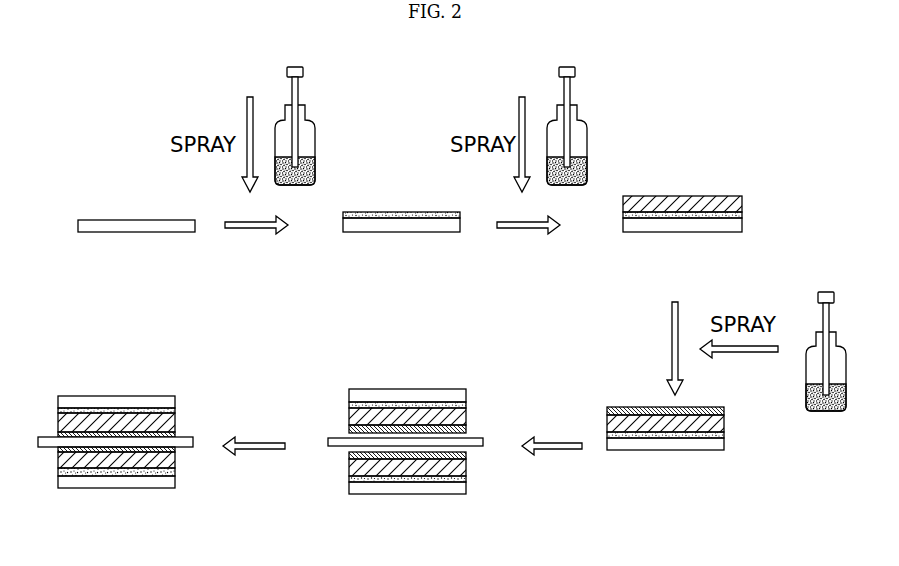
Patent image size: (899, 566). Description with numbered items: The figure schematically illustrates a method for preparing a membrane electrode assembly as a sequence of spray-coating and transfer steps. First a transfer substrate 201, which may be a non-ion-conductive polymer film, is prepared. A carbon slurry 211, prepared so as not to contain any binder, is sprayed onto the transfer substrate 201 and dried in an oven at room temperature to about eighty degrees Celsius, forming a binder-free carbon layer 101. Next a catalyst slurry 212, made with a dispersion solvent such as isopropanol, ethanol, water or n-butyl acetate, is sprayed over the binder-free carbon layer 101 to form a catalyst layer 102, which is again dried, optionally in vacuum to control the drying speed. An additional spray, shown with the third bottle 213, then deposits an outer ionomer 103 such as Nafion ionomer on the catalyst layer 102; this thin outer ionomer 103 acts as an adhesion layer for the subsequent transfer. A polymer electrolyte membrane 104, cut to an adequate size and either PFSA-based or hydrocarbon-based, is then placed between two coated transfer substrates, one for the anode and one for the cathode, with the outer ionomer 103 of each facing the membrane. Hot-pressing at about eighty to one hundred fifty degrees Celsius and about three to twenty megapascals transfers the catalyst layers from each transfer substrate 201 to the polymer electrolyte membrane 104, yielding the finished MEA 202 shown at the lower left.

The binder-free carbon layer 101 is at (392, 213).
The catalyst layer 102 is at (722, 200).
The outer ionomer 103 is at (727, 408).
The polymer electrolyte membrane 104 is at (484, 440).
The transfer substrate 201 is at (80, 226).
The MEA 202 is at (97, 503).
The carbon slurry 211 is at (316, 128).
The catalyst slurry 212 is at (588, 128).
The third spray bottle 213 is at (817, 338).